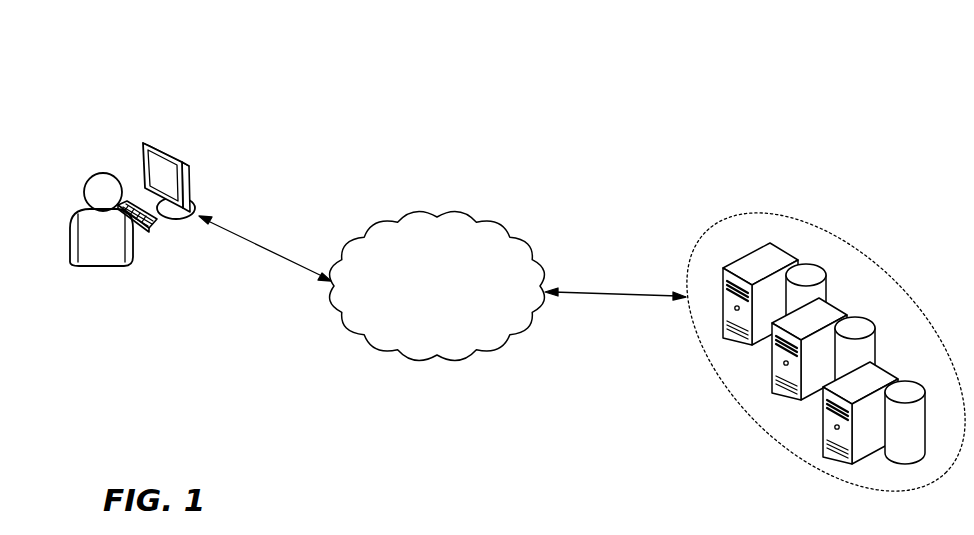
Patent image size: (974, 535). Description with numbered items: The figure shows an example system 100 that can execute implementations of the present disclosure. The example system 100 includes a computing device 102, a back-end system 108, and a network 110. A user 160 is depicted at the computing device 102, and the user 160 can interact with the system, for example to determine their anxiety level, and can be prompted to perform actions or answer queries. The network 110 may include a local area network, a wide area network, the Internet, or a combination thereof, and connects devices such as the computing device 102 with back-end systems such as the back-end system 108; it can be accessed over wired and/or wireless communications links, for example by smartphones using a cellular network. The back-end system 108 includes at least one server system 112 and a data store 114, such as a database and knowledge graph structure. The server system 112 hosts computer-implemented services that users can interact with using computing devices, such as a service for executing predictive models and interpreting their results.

The example system 100 is at (584, 69).
The user 160 is at (93, 173).
The computing device 102 is at (190, 183).
The network 110 is at (440, 215).
The back-end system 108 is at (880, 267).
The server system 112 is at (752, 253).
The data store 114 is at (807, 263).